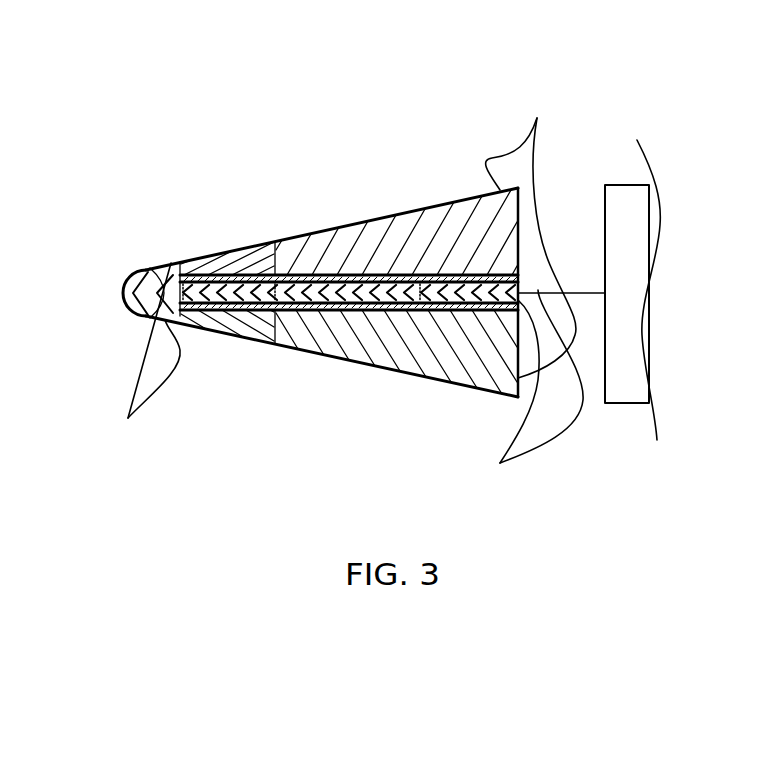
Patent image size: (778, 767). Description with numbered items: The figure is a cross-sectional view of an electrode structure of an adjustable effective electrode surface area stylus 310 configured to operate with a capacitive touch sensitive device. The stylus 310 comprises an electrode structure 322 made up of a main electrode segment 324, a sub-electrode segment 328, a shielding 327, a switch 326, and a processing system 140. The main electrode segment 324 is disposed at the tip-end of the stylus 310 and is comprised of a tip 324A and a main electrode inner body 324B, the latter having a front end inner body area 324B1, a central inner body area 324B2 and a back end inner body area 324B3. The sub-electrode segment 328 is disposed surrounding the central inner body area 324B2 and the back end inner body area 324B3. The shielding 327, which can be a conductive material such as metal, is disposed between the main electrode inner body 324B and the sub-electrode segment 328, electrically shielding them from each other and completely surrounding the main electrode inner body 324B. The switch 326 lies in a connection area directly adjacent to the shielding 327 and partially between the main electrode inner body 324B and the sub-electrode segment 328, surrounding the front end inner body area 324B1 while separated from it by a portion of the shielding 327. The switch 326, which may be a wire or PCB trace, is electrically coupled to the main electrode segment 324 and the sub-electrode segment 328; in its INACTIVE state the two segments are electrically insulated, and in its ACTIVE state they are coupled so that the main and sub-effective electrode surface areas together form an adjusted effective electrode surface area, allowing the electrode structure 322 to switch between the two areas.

The stylus 310 is at (243, 118).
The electrode structure 322 is at (468, 168).
The main electrode segment 324 is at (113, 287).
The tip 324A is at (144, 268).
The main electrode inner body 324B is at (500, 258).
The front end inner body area 324B1 is at (250, 335).
The central inner body area 324B2 is at (300, 338).
The back end inner body area 324B3 is at (410, 311).
The switch 326 is at (140, 359).
The shielding 327 is at (515, 388).
The sub-electrode segment 328 is at (531, 228).
The processing system 140 is at (608, 185).